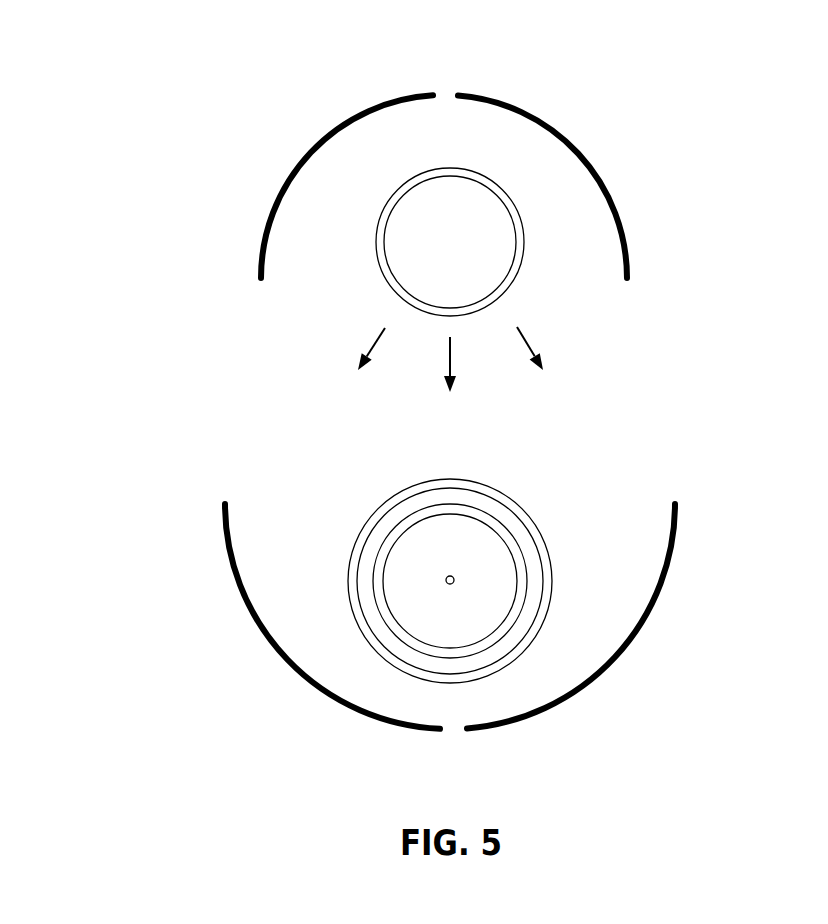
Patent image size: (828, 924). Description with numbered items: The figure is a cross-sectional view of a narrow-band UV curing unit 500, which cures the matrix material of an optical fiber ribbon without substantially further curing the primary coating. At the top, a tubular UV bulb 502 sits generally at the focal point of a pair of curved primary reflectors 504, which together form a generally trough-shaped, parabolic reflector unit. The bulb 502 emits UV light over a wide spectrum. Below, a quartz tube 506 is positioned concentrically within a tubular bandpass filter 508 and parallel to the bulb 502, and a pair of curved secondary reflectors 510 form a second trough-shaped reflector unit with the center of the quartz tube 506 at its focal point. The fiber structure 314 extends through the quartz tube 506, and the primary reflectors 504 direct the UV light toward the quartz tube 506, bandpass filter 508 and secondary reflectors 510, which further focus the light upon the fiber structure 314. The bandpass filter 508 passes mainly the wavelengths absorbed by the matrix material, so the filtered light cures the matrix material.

The narrow-band UV curing unit 500 is at (149, 89).
The tubular UV bulb 502 is at (376, 242).
The pair of curved primary reflectors 504 is at (386, 100).
The quartz tube 506 is at (374, 577).
The tubular bandpass filter 508 is at (366, 523).
The pair of curved secondary reflectors 510 is at (392, 725).
The fiber structure 314 is at (453, 577).